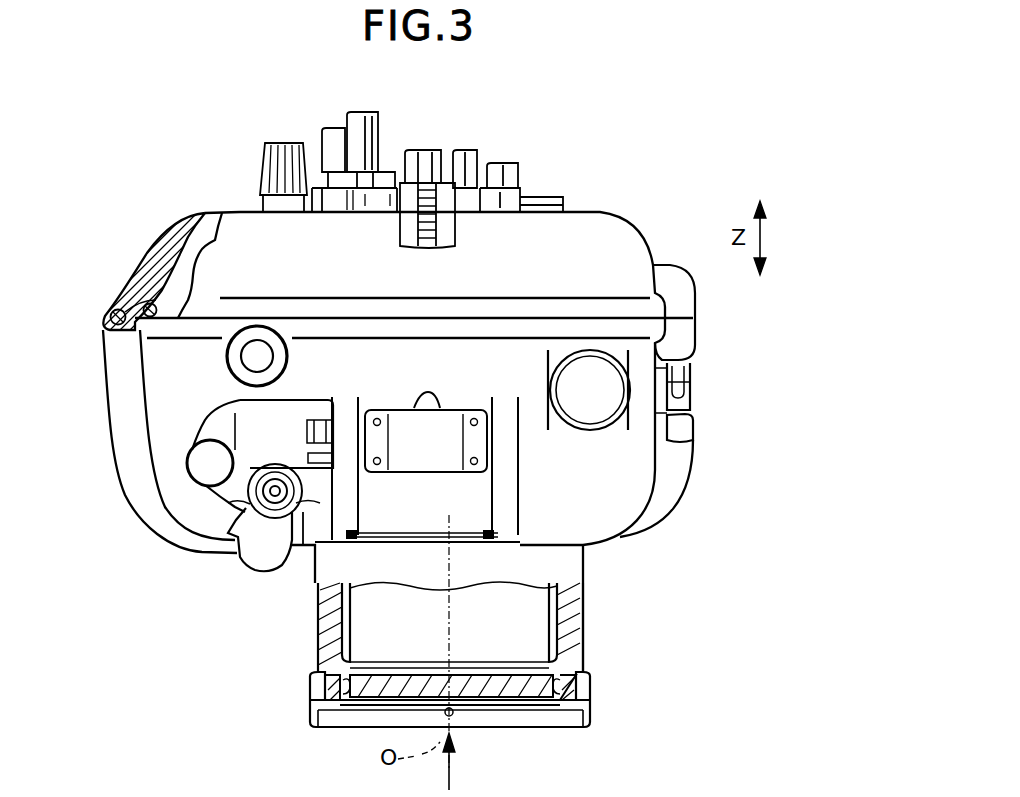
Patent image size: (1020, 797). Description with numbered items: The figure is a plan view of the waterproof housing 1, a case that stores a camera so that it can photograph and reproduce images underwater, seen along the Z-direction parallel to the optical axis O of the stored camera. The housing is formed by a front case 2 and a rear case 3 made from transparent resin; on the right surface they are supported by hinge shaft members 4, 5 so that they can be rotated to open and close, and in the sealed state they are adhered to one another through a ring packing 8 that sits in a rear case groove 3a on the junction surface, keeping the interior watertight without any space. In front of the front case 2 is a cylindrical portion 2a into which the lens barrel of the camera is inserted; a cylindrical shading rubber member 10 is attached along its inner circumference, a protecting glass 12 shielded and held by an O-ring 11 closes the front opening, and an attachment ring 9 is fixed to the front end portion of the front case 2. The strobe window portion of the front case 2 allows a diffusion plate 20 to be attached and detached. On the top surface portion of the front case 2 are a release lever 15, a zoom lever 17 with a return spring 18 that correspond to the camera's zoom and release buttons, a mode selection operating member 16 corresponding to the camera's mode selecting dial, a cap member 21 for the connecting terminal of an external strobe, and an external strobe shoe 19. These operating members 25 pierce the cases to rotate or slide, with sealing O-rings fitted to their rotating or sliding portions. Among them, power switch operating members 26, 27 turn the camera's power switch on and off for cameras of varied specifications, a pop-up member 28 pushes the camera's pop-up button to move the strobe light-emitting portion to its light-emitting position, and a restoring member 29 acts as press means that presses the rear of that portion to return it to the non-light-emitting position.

The waterproof housing 1 is at (169, 152).
The front case 2 is at (148, 453).
The cylindrical portion 2a is at (576, 632).
The rear case 3 is at (168, 226).
The rear case groove 3a is at (148, 303).
The hinge shaft member 4 is at (105, 316).
The hinge shaft member 5 is at (695, 372).
The ring packing 8 is at (150, 312).
The attachment ring 9 is at (597, 688).
The cylindrical shading rubber member 10 is at (334, 638).
The O-ring 11 is at (585, 705).
The protecting glass 12 is at (527, 702).
The release lever 15 is at (192, 468).
The mode selection operating member 16 is at (230, 362).
The zoom lever 17 is at (237, 577).
The return spring 18 is at (228, 522).
The external strobe shoe 19 is at (480, 452).
The diffusion plate 20 is at (484, 537).
The cap member 21 is at (603, 408).
The operating members 25 is at (600, 110).
The power switch operating member 26 is at (520, 178).
The power switch operating member 27 is at (262, 160).
The pop-up member 28 is at (338, 170).
The restoring member 29 is at (426, 152).